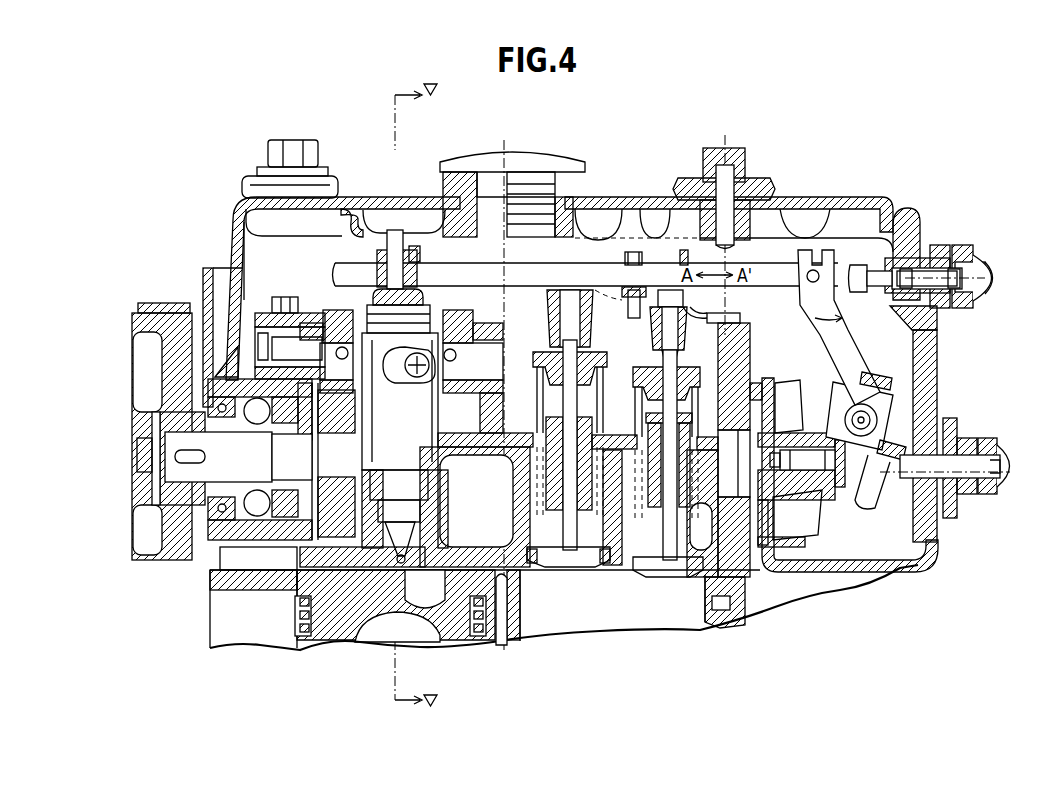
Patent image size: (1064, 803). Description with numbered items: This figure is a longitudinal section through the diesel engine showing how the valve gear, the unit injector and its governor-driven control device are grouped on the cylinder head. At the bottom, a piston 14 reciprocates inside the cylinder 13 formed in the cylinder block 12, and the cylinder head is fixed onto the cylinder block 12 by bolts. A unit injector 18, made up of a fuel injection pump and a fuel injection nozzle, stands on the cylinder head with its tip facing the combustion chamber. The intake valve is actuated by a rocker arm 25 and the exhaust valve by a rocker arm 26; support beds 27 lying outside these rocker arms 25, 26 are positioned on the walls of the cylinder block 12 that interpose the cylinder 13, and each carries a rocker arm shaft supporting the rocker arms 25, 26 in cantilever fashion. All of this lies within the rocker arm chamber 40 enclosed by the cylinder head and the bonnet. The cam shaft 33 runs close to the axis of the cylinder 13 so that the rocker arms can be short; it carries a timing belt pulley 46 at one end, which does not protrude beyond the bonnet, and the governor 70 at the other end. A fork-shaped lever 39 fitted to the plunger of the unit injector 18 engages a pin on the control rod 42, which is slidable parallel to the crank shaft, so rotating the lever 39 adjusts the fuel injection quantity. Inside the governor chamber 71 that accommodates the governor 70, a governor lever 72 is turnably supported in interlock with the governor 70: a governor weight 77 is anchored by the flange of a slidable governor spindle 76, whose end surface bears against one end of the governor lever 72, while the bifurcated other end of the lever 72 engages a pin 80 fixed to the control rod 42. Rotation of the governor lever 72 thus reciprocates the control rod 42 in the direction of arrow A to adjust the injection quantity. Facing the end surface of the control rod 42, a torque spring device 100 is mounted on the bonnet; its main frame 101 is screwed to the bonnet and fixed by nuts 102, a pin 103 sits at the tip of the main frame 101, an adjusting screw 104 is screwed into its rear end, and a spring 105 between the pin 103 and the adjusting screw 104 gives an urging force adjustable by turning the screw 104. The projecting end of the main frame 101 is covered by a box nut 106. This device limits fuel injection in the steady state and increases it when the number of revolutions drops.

The cylinder block 12 is at (210, 628).
The cylinder 13 is at (300, 648).
The piston 14 is at (455, 618).
The unit injector 18 is at (403, 528).
The rocker arm 25 is at (330, 318).
The rocker arm 26 is at (470, 330).
The support bed 27 is at (243, 272).
The cam shaft 33 is at (290, 502).
The fork-shaped lever 39 is at (433, 272).
The rocker arm chamber 40 is at (357, 237).
The control rod 42 is at (765, 268).
The timing belt pulley 46 is at (133, 318).
The governor 70 is at (888, 520).
The governor chamber 71 is at (877, 542).
The governor lever 72 is at (938, 378).
The governor spindle 76 is at (828, 483).
The governor weight 77 is at (806, 522).
The pin 80 is at (815, 270).
The torque spring device 100 is at (984, 319).
The main frame 101 is at (910, 290).
The nuts 102 is at (940, 245).
The pin 103 is at (873, 268).
The adjusting screw 104 is at (966, 245).
The spring 105 is at (918, 256).
The box nut 106 is at (998, 286).